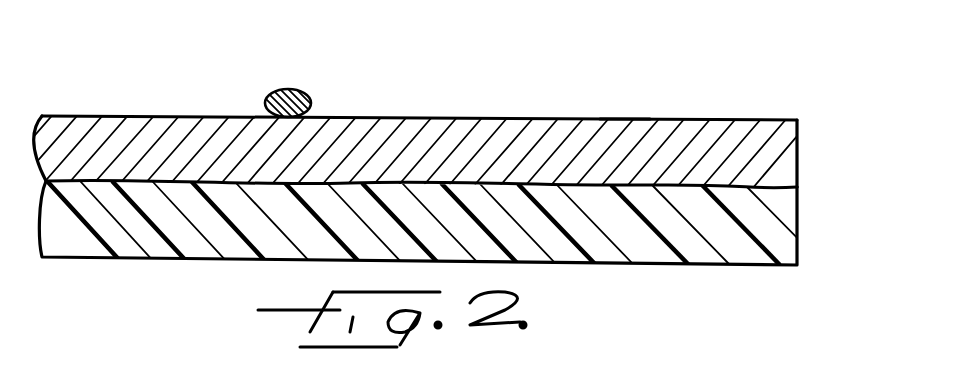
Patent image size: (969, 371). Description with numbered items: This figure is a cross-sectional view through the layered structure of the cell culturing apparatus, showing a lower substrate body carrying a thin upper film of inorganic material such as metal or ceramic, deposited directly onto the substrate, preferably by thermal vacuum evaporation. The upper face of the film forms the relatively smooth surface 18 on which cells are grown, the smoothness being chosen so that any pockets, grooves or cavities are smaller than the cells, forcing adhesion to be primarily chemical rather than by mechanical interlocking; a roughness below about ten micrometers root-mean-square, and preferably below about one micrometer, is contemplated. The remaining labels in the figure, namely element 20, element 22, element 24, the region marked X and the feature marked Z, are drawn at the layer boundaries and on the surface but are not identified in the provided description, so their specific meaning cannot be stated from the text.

The surface 18 is at (710, 256).
The interface between substrate and coating 20 is at (779, 180).
The coating layer 22 is at (735, 115).
The top surface of coating 24 is at (162, 115).
The surface region X is at (624, 118).
The particle on surface Z is at (300, 88).